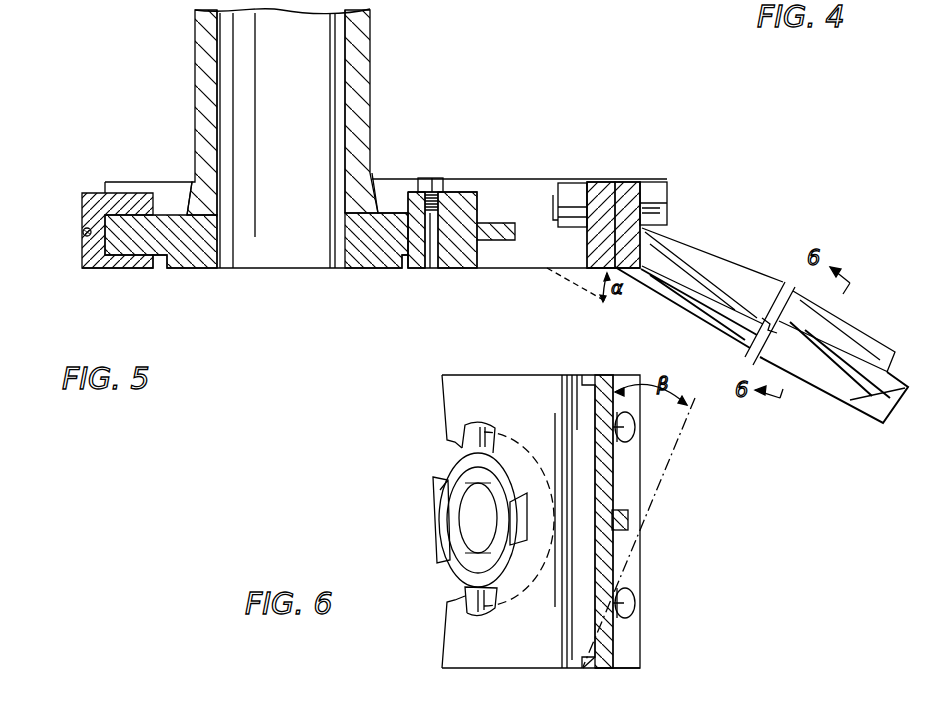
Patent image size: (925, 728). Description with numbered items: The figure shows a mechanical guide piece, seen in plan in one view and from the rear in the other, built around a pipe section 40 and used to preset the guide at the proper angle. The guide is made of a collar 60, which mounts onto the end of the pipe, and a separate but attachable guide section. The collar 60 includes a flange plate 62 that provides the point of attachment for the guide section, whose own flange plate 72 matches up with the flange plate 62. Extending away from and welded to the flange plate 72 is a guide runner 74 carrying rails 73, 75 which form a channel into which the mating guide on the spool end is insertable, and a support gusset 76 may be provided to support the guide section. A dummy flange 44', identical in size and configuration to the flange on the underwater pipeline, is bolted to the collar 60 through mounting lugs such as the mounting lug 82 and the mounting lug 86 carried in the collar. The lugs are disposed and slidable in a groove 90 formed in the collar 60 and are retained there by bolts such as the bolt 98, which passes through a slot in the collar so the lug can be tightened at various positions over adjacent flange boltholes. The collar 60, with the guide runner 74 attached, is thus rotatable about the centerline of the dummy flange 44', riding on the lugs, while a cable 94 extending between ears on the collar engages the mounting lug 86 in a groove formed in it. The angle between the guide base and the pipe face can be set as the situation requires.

In FIG. 5, the pipe section 40 is at (372, 32).
In FIG. 5, the dummy flange 44' is at (361, 249).
In FIG. 6, the dummy flange 44' is at (429, 546).
In FIG. 5, the collar 60 is at (507, 192).
In FIG. 6, the collar 60 is at (503, 392).
In FIG. 5, the flange plate 62 is at (600, 180).
In FIG. 5, the flange plate 72 is at (627, 185).
In FIG. 6, the rail 73 is at (588, 378).
In FIG. 5, the guide runner 74 is at (833, 360).
In FIG. 6, the guide runner 74 is at (603, 488).
In FIG. 5, the rail 75 is at (857, 402).
In FIG. 6, the rail 75 is at (598, 630).
In FIG. 5, the support gusset 76 is at (713, 257).
In FIG. 6, the support gusset 76 is at (628, 520).
In FIG. 5, the mounting lug 82 is at (457, 200).
In FIG. 5, the mounting lug 86 is at (117, 272).
In FIG. 6, the mounting lug 86 is at (425, 500).
In FIG. 5, the groove 90 is at (503, 243).
In FIG. 5, the cable 94 is at (83, 232).
In FIG. 5, the bolt 98 is at (432, 265).